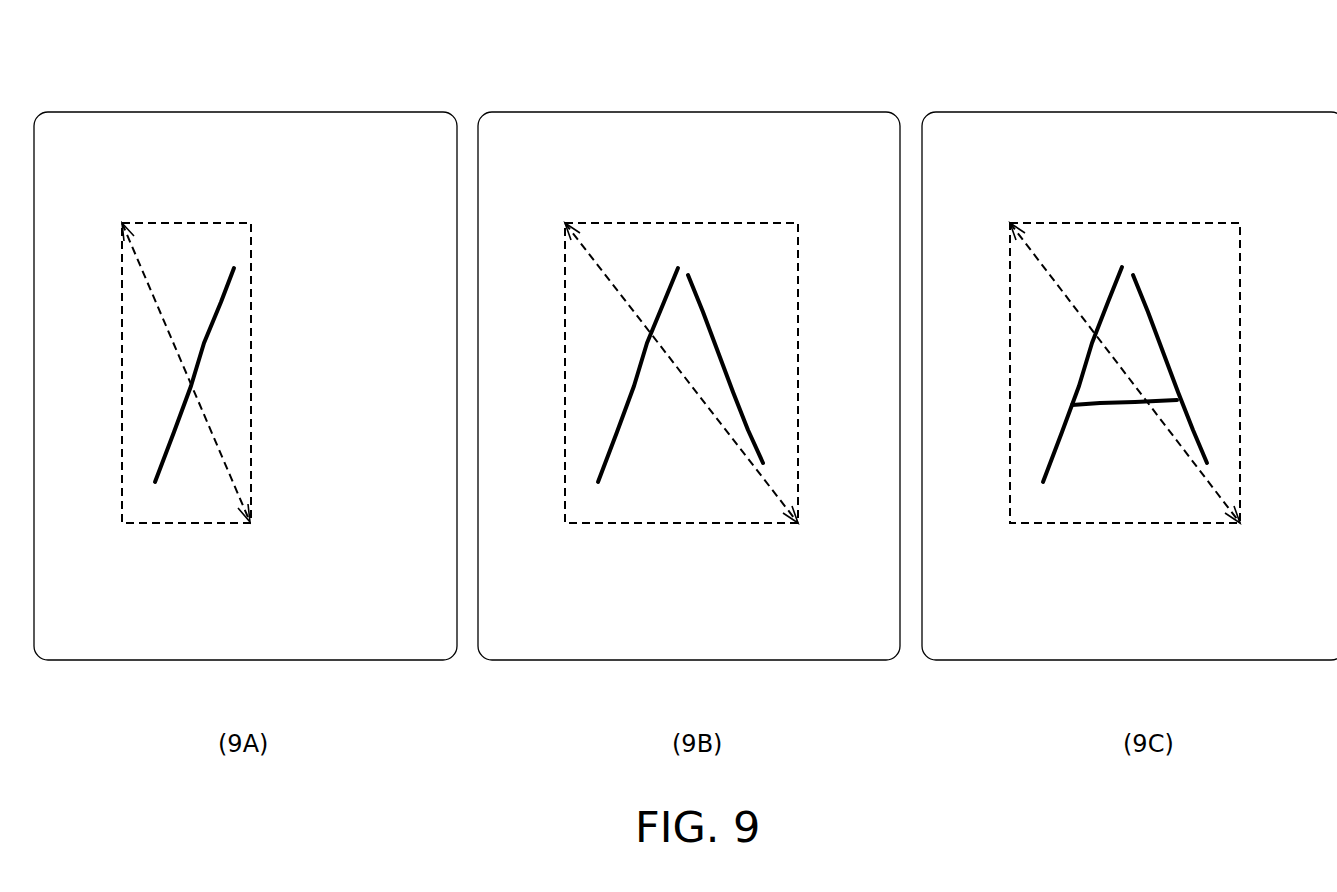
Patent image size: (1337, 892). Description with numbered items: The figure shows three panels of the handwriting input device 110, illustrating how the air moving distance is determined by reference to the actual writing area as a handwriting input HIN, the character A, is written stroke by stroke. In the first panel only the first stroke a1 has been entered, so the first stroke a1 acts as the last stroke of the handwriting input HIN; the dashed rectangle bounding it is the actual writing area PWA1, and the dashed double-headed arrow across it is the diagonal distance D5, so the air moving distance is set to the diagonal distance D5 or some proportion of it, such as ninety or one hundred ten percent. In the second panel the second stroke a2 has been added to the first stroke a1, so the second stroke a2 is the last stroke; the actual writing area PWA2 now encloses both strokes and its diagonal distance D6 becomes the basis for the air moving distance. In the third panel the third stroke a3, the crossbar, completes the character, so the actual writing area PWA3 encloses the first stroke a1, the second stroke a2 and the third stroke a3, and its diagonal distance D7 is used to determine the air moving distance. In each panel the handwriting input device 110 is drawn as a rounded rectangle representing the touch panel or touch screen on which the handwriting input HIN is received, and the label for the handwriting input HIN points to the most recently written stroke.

The handwriting input device 110 is at (243, 112).
The actual writing area PWA1 is at (175, 523).
The actual writing area PWA2 is at (672, 523).
The actual writing area PWA3 is at (1115, 523).
The diagonal distance D5 is at (186, 372).
The diagonal distance D6 is at (681, 373).
The diagonal distance D7 is at (1125, 373).
The handwriting input HIN is at (682, 333).
The first stroke a1 is at (190, 377).
The second stroke a2 is at (715, 338).
The third stroke a3 is at (1082, 405).